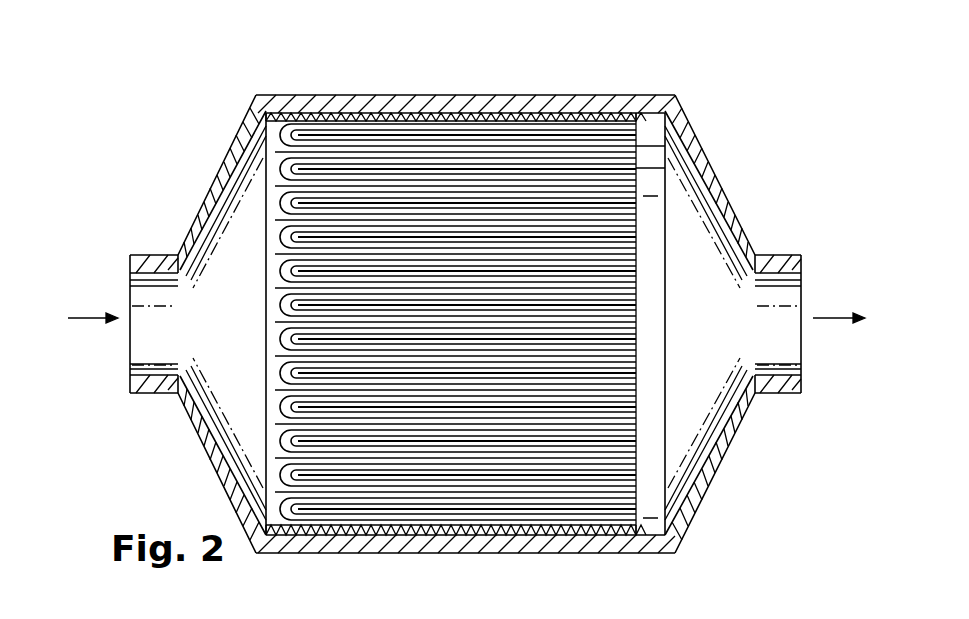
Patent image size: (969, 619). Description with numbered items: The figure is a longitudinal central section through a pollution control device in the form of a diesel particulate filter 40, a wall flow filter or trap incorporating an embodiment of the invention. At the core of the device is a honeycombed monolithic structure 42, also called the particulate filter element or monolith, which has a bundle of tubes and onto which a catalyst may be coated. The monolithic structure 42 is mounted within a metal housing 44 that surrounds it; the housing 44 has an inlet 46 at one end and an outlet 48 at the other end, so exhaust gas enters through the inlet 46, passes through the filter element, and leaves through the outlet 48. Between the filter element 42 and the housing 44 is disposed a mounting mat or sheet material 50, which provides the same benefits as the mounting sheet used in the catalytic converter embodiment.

The diesel particulate filter 40 is at (730, 124).
The monolithic structure 42 is at (356, 100).
The housing 44 is at (439, 83).
The inlet 46 is at (190, 447).
The outlet 48 is at (713, 458).
The mounting mat 50 is at (498, 108).